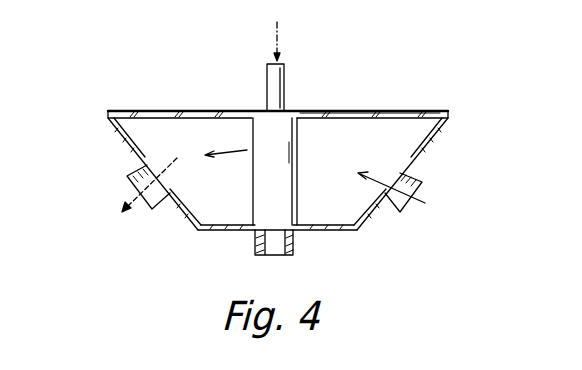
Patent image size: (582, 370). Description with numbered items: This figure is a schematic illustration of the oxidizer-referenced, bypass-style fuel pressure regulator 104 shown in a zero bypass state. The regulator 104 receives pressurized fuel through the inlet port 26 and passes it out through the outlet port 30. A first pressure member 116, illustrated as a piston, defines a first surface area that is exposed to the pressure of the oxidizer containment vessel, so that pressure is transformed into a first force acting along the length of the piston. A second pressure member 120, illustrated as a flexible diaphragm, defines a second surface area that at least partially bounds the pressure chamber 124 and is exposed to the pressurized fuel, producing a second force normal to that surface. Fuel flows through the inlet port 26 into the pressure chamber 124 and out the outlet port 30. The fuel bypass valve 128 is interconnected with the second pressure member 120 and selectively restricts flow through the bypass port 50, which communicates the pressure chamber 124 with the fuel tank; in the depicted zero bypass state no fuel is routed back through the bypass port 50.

The fuel pressure regulator 104 is at (330, 139).
The first pressure member 116 is at (318, 43).
The second pressure member 120 is at (368, 87).
The pressure chamber 124 is at (393, 89).
The fuel bypass valve 128 is at (319, 162).
The outlet port 30 is at (130, 177).
The inlet port 26 is at (480, 168).
The bypass port 50 is at (330, 258).